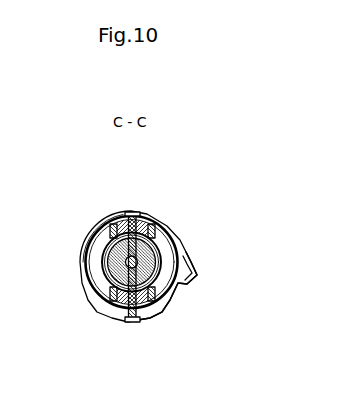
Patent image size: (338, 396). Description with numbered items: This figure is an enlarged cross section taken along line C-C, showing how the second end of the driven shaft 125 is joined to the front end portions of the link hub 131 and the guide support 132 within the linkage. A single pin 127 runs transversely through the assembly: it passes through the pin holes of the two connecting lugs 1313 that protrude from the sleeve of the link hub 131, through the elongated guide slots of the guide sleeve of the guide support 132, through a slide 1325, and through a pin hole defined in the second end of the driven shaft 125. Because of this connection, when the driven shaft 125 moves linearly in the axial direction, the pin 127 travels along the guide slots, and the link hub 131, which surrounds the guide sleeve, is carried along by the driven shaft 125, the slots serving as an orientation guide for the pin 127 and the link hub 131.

The driven shaft 125 is at (97, 302).
The connecting lugs 1313 is at (160, 312).
The guide support 132 is at (90, 248).
The link hub 131 is at (166, 239).
The slide 1325 is at (110, 262).
The pin 127 is at (134, 214).